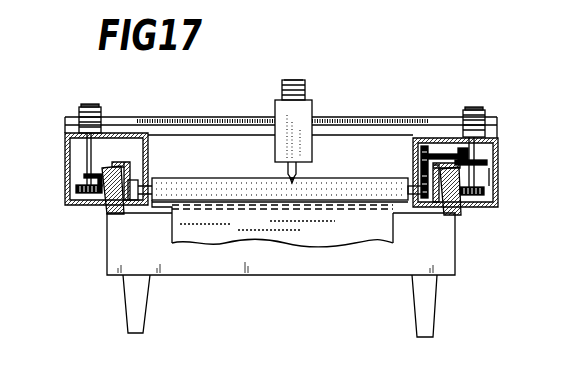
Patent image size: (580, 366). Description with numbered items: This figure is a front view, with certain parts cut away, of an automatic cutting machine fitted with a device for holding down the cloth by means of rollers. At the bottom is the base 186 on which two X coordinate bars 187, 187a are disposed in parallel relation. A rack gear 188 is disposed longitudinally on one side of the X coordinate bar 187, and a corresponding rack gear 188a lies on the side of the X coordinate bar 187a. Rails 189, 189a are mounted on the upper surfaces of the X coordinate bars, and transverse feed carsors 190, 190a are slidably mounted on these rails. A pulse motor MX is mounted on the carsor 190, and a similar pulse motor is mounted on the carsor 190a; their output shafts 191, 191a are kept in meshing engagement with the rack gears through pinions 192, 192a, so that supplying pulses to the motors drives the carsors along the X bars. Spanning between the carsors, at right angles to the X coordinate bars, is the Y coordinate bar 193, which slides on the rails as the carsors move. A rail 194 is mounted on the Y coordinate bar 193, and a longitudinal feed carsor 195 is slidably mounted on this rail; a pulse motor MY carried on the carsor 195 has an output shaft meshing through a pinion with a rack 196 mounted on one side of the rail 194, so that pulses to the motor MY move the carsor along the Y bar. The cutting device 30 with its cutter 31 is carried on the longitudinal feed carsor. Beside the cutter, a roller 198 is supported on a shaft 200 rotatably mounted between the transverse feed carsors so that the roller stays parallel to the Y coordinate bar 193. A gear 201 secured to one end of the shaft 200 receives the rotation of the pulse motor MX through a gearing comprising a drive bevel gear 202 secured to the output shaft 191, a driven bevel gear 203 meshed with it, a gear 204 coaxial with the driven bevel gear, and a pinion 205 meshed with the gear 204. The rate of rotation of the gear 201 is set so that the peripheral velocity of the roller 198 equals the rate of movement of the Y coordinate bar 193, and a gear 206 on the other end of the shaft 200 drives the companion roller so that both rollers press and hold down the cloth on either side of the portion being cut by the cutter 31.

The base 186 is at (390, 268).
The X coordinate bar 187 is at (454, 232).
The X coordinate bar 187a is at (115, 216).
The rack gear 188 is at (456, 215).
The rack gear 188a is at (110, 203).
The rail 189 is at (476, 168).
The rail 189a is at (93, 177).
The transverse feed carsor 190 is at (499, 142).
The transverse feed carsor 190a is at (66, 134).
The output shaft 191 is at (476, 153).
The output shaft 191a is at (86, 158).
The pinion 192 is at (467, 198).
The pinion 192a is at (77, 188).
The Y coordinate bar 193 is at (172, 126).
The rail 194 is at (427, 123).
The longitudinal feed carsor 195 is at (298, 115).
The rack 196 is at (221, 123).
The roller 198 is at (206, 186).
The shaft 200 is at (399, 209).
The gear 201 is at (435, 207).
The drive bevel gear 202 is at (491, 172).
The driven bevel gear 203 is at (458, 150).
The gear 204 is at (421, 150).
The pinion 205 is at (421, 177).
The gear 206 is at (144, 178).
The cutting device 30 is at (287, 168).
The cutter 31 is at (295, 186).
The pulse motor MX is at (85, 104).
The pulse motor MY is at (289, 79).